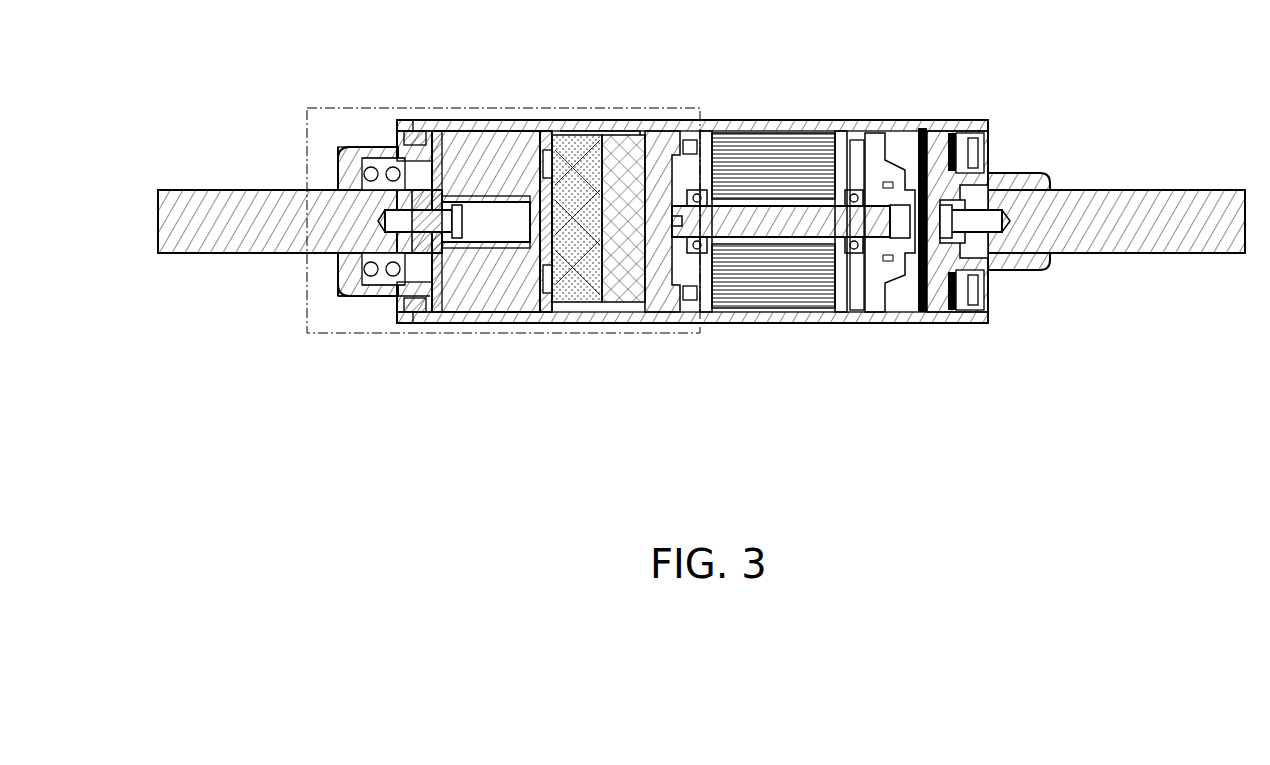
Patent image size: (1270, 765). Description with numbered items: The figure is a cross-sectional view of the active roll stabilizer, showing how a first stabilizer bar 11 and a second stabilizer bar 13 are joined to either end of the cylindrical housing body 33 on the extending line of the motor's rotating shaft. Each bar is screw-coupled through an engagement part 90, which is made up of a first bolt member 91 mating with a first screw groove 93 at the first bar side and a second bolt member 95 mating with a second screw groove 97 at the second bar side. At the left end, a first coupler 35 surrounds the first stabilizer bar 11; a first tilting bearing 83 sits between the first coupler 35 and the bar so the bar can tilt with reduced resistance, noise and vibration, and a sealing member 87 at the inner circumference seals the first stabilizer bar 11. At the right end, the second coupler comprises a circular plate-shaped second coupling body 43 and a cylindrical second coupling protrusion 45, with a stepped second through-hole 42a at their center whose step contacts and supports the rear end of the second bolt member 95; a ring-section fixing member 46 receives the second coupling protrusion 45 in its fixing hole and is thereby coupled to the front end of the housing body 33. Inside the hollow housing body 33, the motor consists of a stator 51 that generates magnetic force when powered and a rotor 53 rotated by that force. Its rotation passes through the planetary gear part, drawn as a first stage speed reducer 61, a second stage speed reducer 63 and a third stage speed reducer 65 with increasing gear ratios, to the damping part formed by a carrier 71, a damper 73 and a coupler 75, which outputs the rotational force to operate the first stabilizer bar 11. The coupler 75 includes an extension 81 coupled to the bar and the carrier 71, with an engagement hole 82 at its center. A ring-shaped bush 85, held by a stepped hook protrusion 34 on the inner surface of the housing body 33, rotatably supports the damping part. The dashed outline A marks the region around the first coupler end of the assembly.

The first stabilizer bar 11 is at (195, 253).
The second stabilizer bar 13 is at (1142, 200).
The housing body 33 is at (618, 323).
The hook protrusion 34 is at (546, 131).
The first coupler 35 is at (345, 300).
The second through-hole 42a is at (905, 323).
The second coupling body 43 is at (923, 128).
The second coupling protrusion 45 is at (1020, 173).
The fixing member 46 is at (965, 131).
The stator 51 is at (772, 323).
The rotor 53 is at (778, 133).
The first stage speed reducer 61 is at (662, 131).
The second stage speed reducer 63 is at (580, 135).
The third stage speed reducer 65 is at (622, 135).
The carrier 71 is at (480, 131).
The damper 73 is at (458, 312).
The coupler 75 is at (495, 312).
The extension 81 is at (418, 135).
The engagement hole 82 is at (437, 312).
The first tilting bearing 83 is at (405, 138).
The bush 85 is at (543, 131).
The sealing member 87 is at (340, 168).
The engagement part 90 is at (690, 395).
The first bolt member 91 is at (410, 253).
The first screw groove 93 is at (420, 240).
The second bolt member 95 is at (1010, 300).
The second screw groove 97 is at (1010, 228).
The region A is at (307, 142).